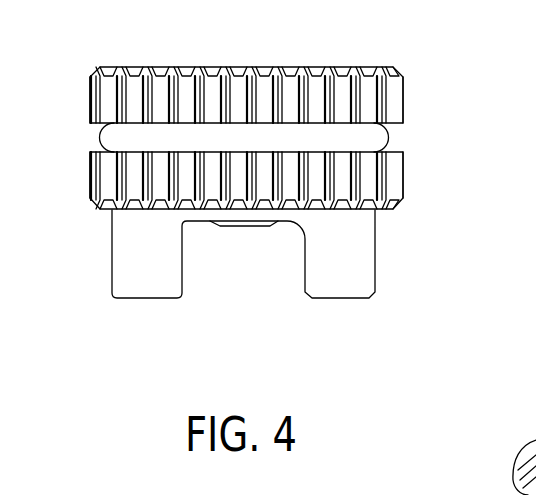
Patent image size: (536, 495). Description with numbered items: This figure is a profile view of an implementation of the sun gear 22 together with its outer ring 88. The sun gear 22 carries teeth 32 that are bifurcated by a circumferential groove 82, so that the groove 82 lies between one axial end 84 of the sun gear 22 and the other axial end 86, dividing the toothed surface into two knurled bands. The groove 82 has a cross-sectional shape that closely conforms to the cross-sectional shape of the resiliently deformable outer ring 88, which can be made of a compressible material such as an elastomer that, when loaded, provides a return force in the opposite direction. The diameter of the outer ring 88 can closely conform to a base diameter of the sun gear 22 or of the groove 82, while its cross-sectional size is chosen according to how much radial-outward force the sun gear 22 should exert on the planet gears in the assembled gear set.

The sun gear 22 is at (192, 303).
The teeth 32 is at (403, 105).
The circumferential groove 82 is at (98, 153).
The axial end 84 is at (125, 222).
The axial end 86 is at (178, 67).
The outer ring 88 is at (147, 133).